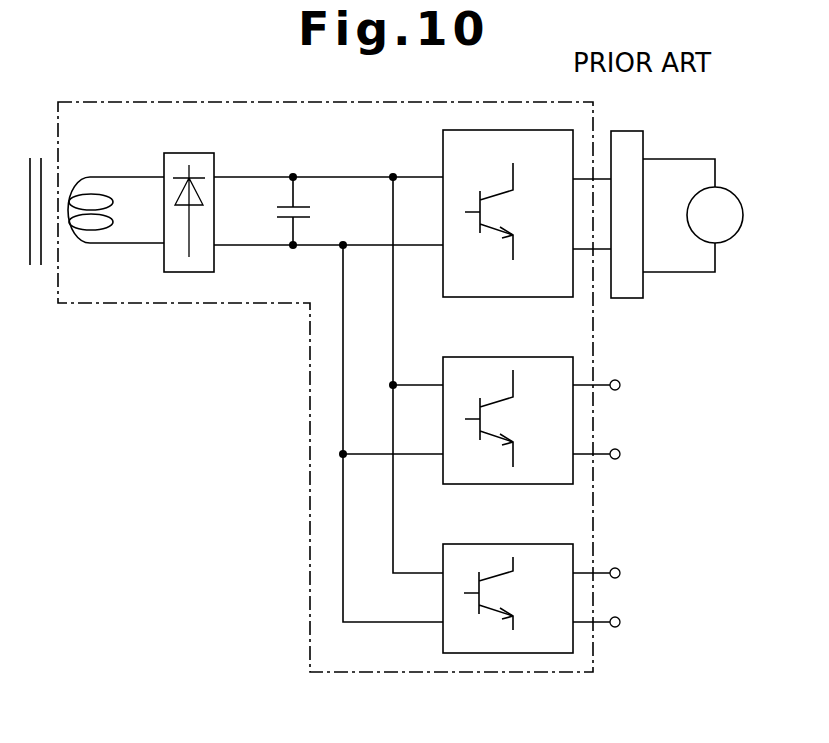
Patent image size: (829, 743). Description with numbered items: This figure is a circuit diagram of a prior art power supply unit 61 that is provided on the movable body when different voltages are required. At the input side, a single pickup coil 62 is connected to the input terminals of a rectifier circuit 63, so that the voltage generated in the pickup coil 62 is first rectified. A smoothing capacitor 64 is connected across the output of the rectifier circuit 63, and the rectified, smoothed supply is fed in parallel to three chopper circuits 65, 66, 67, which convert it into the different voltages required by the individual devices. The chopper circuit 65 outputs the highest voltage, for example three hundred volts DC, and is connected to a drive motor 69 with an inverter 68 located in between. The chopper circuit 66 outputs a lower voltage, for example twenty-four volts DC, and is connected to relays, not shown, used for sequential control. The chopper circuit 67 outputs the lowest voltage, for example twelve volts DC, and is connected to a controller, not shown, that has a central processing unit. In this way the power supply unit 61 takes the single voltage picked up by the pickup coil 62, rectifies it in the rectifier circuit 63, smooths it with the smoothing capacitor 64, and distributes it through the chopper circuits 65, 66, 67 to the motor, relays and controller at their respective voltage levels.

The power supply unit 61 is at (97, 304).
The pickup coil 62 is at (72, 247).
The rectifier circuit 63 is at (205, 152).
The smoothing capacitor 64 is at (307, 199).
The chopper circuit 65 is at (440, 270).
The chopper circuit 66 is at (441, 470).
The chopper circuit 67 is at (443, 636).
The inverter 68 is at (628, 292).
The drive motor 69 is at (727, 235).